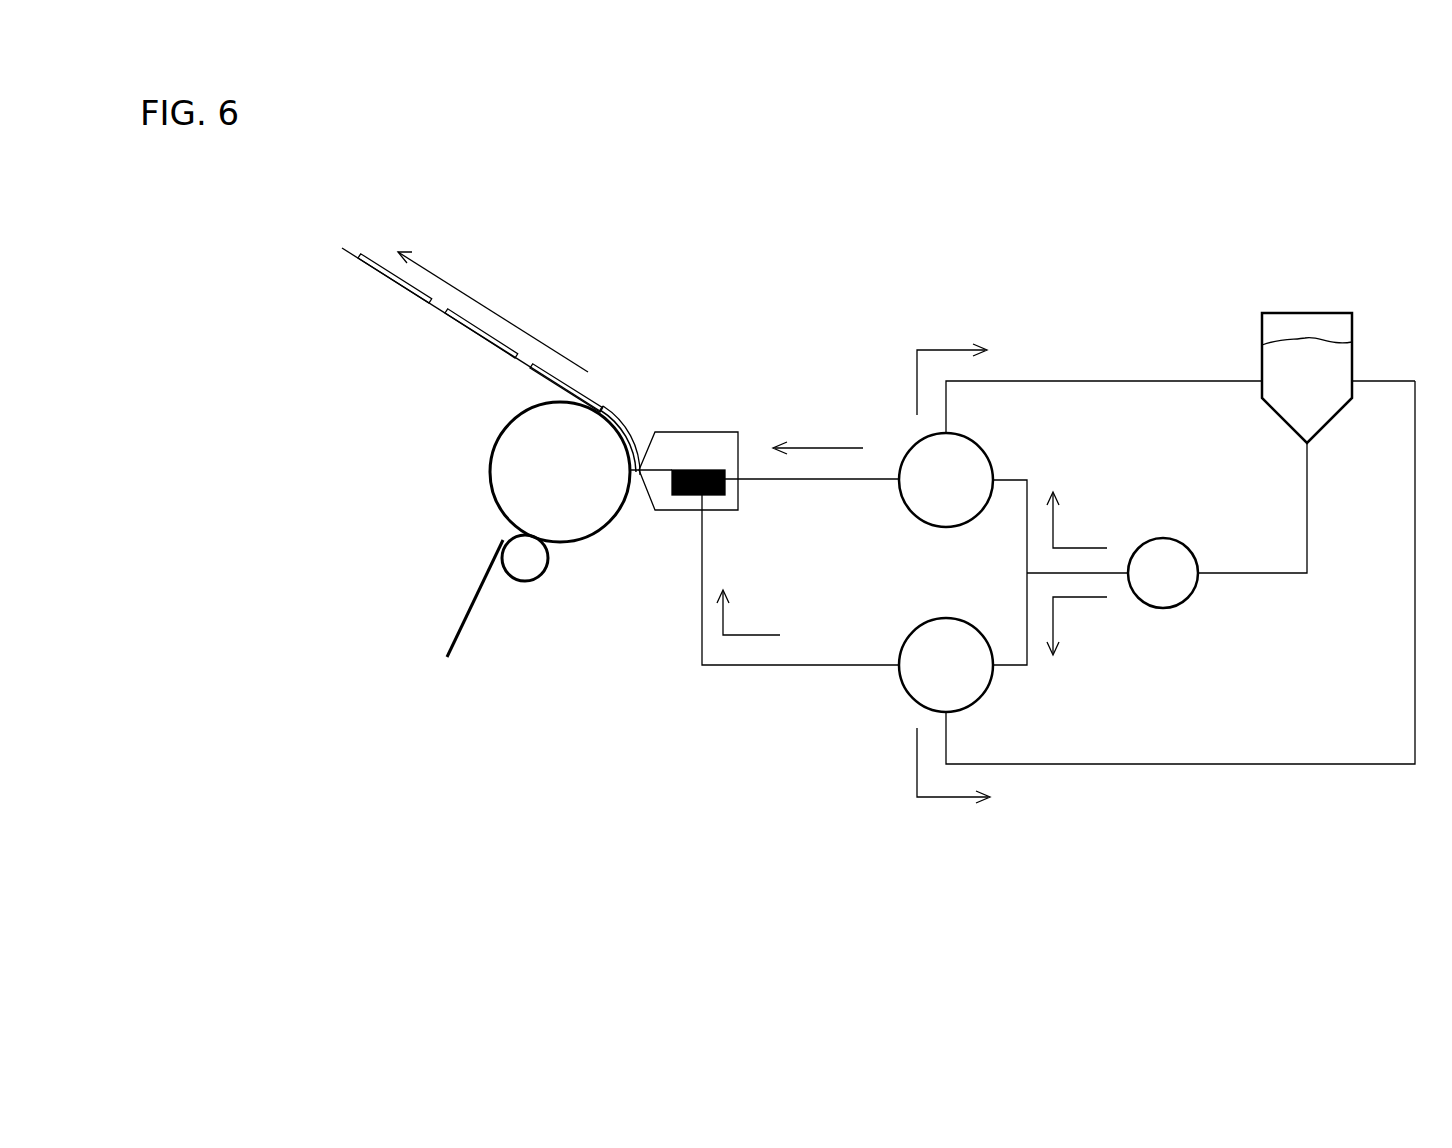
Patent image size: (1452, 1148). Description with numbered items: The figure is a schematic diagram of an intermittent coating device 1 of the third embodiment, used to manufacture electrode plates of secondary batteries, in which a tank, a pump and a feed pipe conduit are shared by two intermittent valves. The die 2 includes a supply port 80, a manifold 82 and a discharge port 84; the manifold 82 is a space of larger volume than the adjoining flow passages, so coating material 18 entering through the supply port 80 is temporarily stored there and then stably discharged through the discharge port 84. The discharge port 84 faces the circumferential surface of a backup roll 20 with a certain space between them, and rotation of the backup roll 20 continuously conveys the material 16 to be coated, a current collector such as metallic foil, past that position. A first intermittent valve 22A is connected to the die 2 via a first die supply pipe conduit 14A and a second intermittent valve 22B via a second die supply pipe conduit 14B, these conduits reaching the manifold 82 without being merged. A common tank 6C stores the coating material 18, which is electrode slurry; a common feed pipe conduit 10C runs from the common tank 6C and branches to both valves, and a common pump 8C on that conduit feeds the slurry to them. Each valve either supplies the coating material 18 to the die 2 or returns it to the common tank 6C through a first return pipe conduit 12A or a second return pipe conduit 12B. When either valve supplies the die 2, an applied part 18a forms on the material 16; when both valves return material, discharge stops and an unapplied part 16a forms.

The intermittent coating device 1 is at (885, 898).
The die 2 is at (707, 483).
The common tank 6C is at (1353, 368).
The common pump 8C is at (1165, 537).
The common feed pipe conduit 10C is at (1242, 572).
The first return pipe conduit 12A is at (1122, 380).
The second return pipe conduit 12B is at (1122, 766).
The first die supply pipe conduit 14A is at (843, 481).
The second die supply pipe conduit 14B is at (793, 668).
The material to be coated 16 is at (462, 618).
The unapplied part 16a is at (435, 312).
The coating material 18 is at (1327, 342).
The applied part 18a is at (385, 280).
The backup roll 20 is at (507, 472).
The first intermittent valve 22A is at (977, 441).
The second intermittent valve 22B is at (977, 626).
The supply port 80 is at (740, 478).
The manifold 82 is at (715, 495).
The discharge port 84 is at (642, 468).